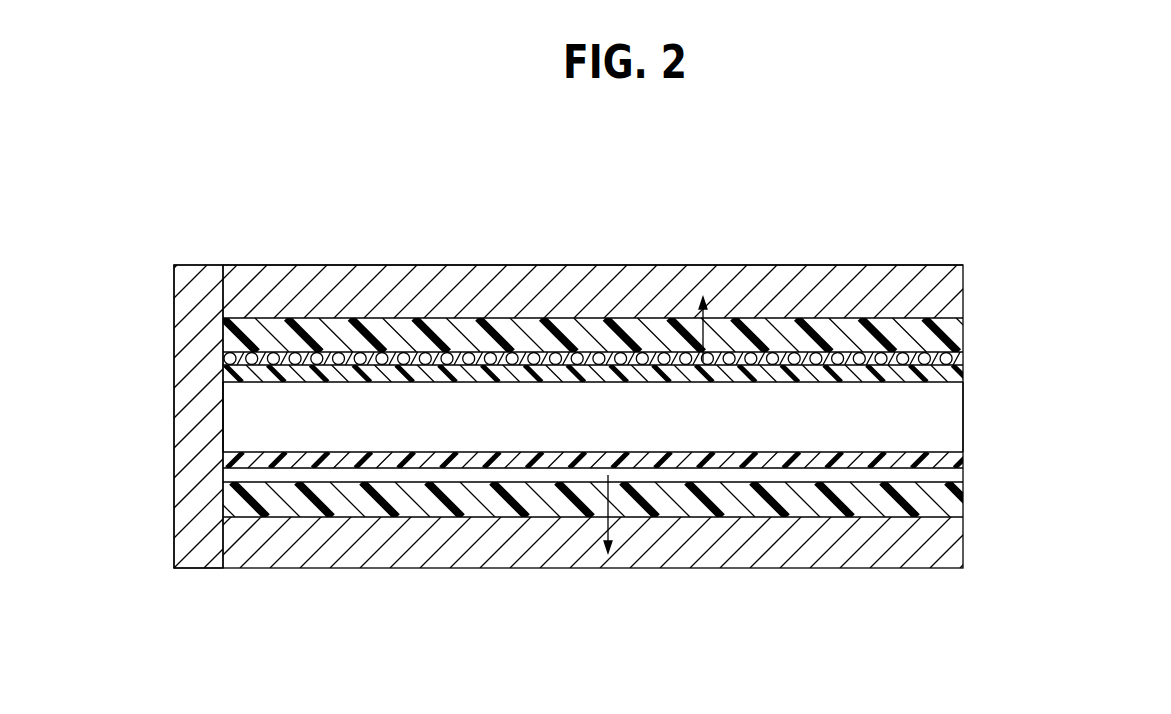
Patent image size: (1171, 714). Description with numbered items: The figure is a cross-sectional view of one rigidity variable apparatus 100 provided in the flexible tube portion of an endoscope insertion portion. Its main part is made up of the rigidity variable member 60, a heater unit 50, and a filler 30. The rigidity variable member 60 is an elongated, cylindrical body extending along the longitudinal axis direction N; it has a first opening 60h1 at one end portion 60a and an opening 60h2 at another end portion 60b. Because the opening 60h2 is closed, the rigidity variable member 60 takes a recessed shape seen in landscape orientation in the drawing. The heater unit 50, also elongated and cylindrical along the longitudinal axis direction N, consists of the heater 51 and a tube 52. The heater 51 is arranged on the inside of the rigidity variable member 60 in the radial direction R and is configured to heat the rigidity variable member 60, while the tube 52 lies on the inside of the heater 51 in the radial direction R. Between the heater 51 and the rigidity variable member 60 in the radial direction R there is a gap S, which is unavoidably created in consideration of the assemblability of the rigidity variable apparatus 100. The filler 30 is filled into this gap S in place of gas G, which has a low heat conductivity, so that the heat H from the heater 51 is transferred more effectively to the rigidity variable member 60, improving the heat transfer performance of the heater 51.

The rigidity variable apparatus 100 is at (1070, 206).
The rigidity variable member 60 is at (633, 283).
The one end portion 60a is at (965, 270).
The another end portion 60b is at (207, 297).
The first opening 60h1 is at (965, 420).
The opening 60h2 is at (222, 418).
The filler 30 is at (963, 334).
The heater unit 50 is at (658, 415).
The heater 51 is at (963, 358).
The tube 52 is at (634, 416).
The gap S is at (448, 333).
The gas G is at (513, 427).
The heat H is at (738, 318).
The radial direction R is at (114, 182).
The longitudinal axis direction N is at (686, 667).